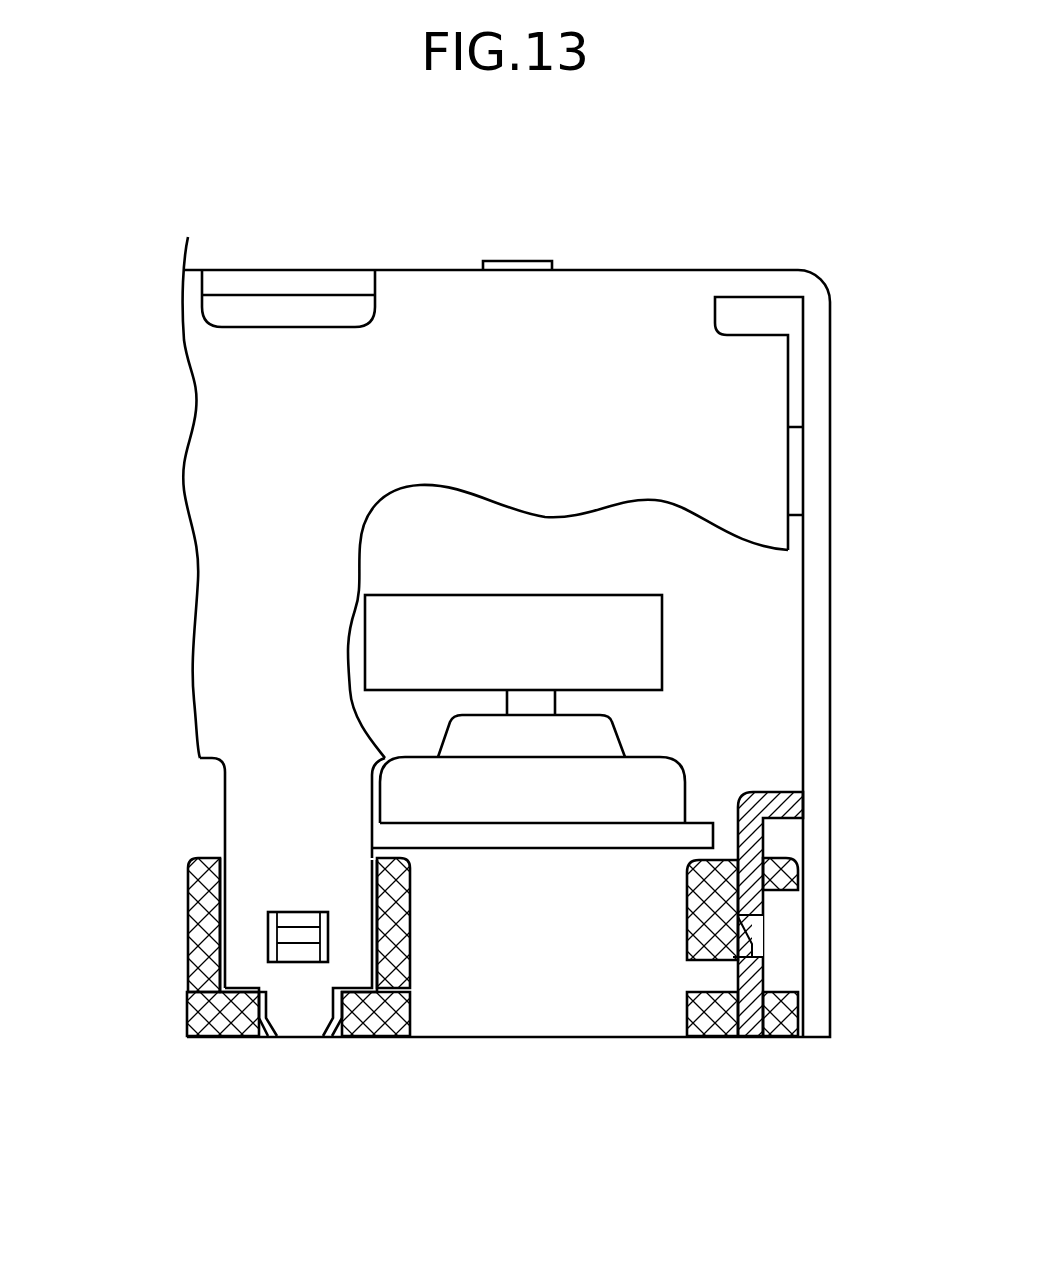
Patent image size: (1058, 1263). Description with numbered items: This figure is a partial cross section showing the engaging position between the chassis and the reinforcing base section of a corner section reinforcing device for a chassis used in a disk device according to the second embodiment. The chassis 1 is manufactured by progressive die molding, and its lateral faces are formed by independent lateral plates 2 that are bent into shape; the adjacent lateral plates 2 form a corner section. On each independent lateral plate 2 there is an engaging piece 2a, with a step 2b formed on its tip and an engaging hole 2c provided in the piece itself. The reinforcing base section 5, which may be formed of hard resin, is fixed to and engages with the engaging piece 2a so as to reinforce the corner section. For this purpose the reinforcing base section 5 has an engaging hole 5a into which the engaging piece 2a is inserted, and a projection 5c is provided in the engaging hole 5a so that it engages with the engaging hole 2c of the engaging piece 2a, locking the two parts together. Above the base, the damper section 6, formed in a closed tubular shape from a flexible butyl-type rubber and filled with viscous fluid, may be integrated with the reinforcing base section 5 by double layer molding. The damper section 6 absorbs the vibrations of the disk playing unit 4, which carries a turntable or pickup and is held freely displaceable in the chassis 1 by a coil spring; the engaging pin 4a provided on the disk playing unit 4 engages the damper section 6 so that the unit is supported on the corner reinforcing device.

The chassis 1 is at (421, 258).
The independent lateral plate 2 is at (632, 352).
The engaging piece 2a is at (250, 883).
The step 2b is at (225, 1033).
The engaging hole 2c is at (268, 922).
The disk playing unit 4 is at (582, 643).
The engaging pin 4a is at (537, 707).
The reinforcing base section 5 is at (378, 1013).
The engaging hole 5a is at (753, 1003).
The projection 5c is at (188, 882).
The damper section 6 is at (532, 735).